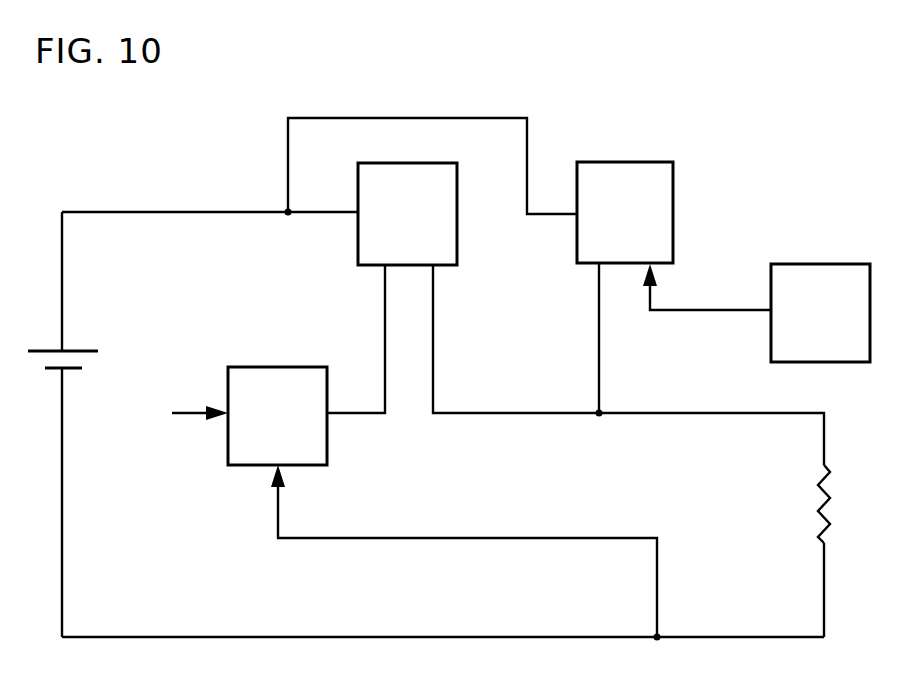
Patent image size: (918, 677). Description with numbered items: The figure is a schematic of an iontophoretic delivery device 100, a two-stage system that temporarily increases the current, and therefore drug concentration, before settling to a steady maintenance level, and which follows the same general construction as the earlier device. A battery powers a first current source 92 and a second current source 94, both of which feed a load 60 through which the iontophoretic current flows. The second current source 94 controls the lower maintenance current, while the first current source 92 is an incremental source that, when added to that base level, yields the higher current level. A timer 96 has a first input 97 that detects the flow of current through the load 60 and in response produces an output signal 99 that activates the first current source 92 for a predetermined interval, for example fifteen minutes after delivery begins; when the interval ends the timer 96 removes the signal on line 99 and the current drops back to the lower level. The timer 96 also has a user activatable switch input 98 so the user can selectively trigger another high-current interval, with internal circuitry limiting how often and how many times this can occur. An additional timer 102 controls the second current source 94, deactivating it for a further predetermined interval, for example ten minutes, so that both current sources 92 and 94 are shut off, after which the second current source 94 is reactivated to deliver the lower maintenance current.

The iontophoretic delivery device 100 is at (672, 126).
The first current source 92 is at (455, 183).
The second current source 94 is at (673, 181).
The timer 96 is at (283, 366).
The first input 97 is at (279, 513).
The user activatable switch input 98 is at (197, 411).
The output signal 99 is at (385, 333).
The additional timer 102 is at (800, 365).
The load 60 is at (818, 528).